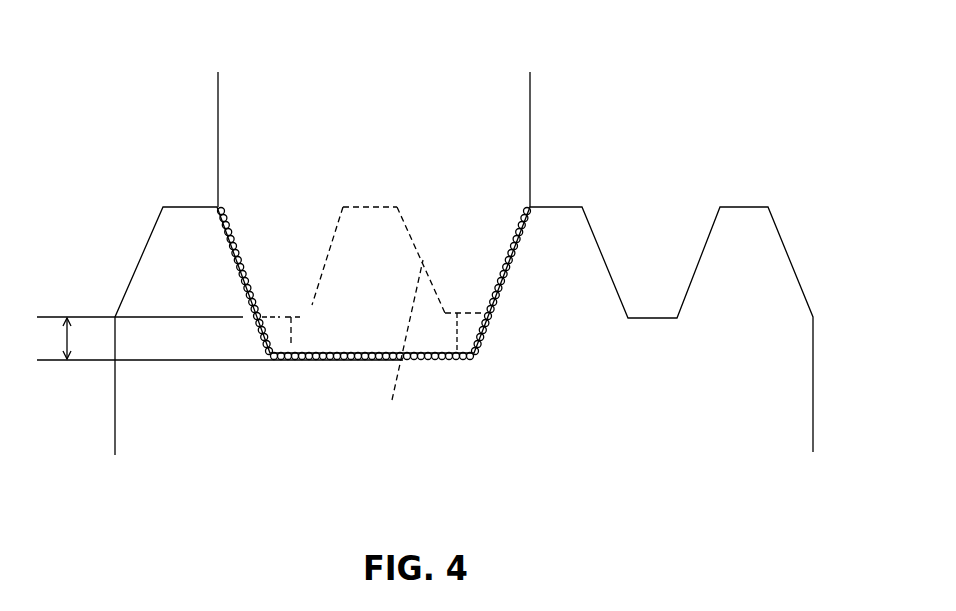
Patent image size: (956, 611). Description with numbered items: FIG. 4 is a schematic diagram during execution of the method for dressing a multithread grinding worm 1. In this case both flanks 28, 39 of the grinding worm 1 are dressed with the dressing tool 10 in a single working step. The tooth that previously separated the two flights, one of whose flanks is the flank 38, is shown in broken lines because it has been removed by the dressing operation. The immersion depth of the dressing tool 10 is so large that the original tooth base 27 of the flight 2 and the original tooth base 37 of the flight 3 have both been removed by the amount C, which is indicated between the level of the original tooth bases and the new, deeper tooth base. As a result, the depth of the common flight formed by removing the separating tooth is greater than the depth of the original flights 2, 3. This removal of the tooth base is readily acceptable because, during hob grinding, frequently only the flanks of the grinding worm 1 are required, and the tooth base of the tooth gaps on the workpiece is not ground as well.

The multithread grinding worm 1 is at (813, 365).
The dressing tool 10 is at (530, 100).
The flight 2 is at (275, 223).
The flight 3 is at (458, 220).
The original tooth base 27 is at (289, 366).
The flank 28 is at (223, 240).
The flank 39 is at (513, 260).
The original tooth base 37 is at (458, 370).
The flank 38 is at (402, 344).
The amount of removal C is at (53, 338).